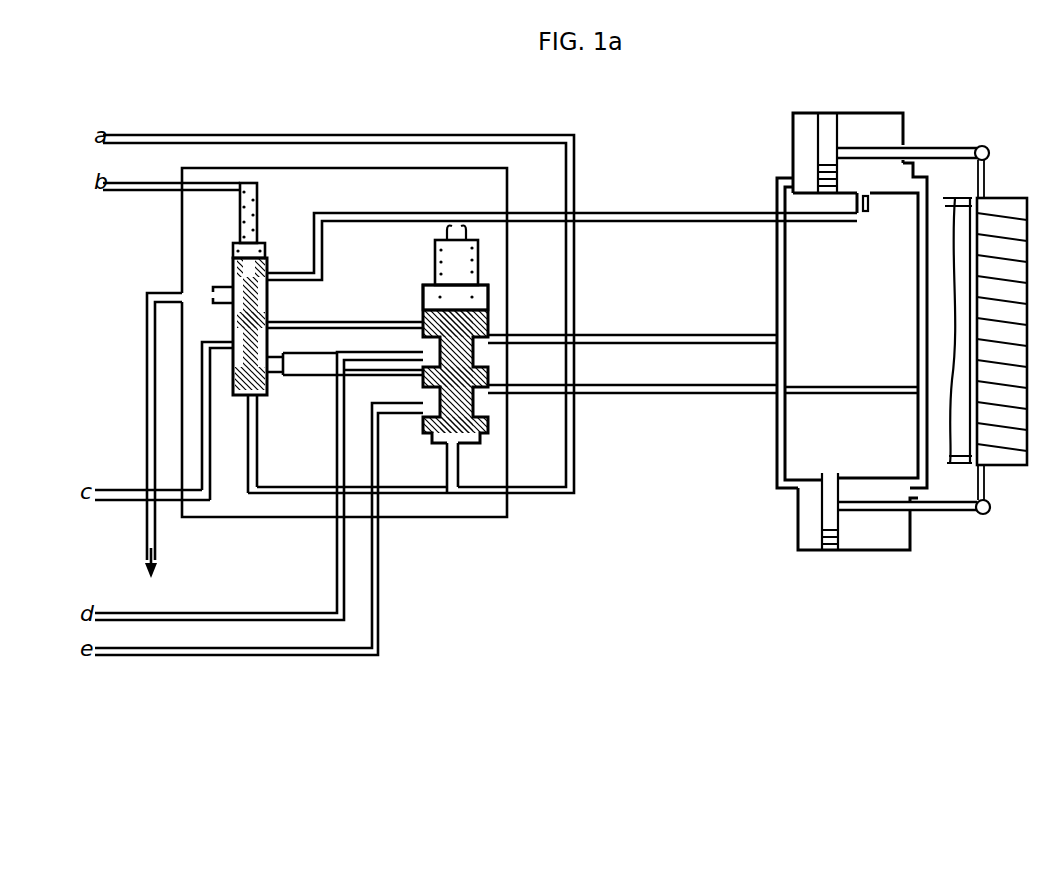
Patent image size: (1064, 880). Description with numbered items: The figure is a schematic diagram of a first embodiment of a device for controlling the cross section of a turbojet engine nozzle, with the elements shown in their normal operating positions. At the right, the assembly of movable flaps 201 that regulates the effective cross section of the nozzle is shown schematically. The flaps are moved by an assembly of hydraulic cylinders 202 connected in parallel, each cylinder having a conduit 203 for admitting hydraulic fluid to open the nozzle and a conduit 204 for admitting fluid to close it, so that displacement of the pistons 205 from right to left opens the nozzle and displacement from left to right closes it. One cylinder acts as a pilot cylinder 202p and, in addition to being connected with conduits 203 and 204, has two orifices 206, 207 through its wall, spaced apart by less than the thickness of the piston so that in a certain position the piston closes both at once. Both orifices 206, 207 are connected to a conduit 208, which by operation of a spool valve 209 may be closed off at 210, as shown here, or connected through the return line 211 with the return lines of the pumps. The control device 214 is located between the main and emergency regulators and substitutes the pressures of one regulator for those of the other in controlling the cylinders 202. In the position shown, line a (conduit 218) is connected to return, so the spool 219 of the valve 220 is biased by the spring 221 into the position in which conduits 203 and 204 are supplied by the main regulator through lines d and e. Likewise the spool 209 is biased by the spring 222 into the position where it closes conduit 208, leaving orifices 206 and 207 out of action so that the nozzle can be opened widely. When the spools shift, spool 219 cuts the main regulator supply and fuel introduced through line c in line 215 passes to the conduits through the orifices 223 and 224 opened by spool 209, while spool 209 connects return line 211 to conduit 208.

The assembly of movable flaps 201 is at (1012, 458).
The cylinder 202 is at (807, 552).
The pilot cylinder 202p is at (805, 90).
The conduit 203 is at (925, 307).
The conduit 204 is at (777, 250).
The piston 205 is at (829, 113).
The orifice 206 is at (852, 208).
The orifice 207 is at (873, 200).
The conduit 208 is at (687, 212).
The spool valve 209 is at (267, 293).
The closure point 210 is at (265, 276).
The return line 211 is at (213, 290).
The control device 214 is at (438, 177).
The line 215 is at (205, 440).
The conduit 218 is at (573, 290).
The spool 219 is at (478, 325).
The valve 220 is at (423, 295).
The spring 221 is at (480, 262).
The spring 222 is at (262, 198).
The orifice 223 is at (280, 356).
The orifice 224 is at (283, 321).